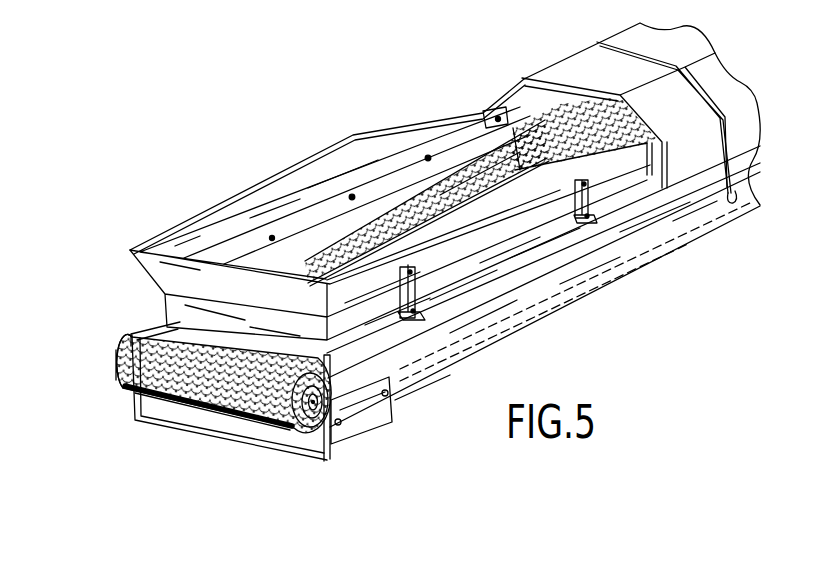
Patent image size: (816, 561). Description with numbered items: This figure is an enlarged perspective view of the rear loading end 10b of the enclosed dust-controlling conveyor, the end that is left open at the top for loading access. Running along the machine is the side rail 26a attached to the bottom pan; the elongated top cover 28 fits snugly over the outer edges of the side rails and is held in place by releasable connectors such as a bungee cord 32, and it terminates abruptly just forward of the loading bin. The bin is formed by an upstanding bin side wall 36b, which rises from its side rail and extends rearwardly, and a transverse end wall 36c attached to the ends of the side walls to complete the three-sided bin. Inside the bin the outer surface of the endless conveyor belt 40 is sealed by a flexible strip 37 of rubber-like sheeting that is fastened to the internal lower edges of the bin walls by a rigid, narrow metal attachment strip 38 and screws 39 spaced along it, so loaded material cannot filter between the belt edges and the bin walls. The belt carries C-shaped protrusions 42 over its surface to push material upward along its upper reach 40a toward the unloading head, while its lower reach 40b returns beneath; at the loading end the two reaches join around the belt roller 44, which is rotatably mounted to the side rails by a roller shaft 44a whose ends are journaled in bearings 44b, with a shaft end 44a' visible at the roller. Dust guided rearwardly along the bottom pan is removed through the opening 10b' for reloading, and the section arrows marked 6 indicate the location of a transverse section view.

The loading end 10b is at (390, 181).
The opening 10b' is at (223, 419).
The side rail 26a is at (495, 313).
The top cover 28 is at (684, 45).
The bungee cord 32 is at (621, 47).
The bin side wall 36b is at (278, 189).
The transverse end wall 36c is at (162, 275).
The flexible strip 37 is at (467, 176).
The attachment strip 38 is at (391, 176).
The screws 39 is at (428, 157).
The conveyor belt 40 is at (130, 393).
The upper reach 40a is at (539, 80).
The lower reach 40b is at (420, 383).
The protrusions 42 is at (130, 334).
The belt roller 44 is at (295, 430).
The roller shaft 44a is at (360, 450).
The roller hub 44a' is at (307, 448).
The bearings 44b is at (115, 362).
The section line 6- 6 is at (80, 218).